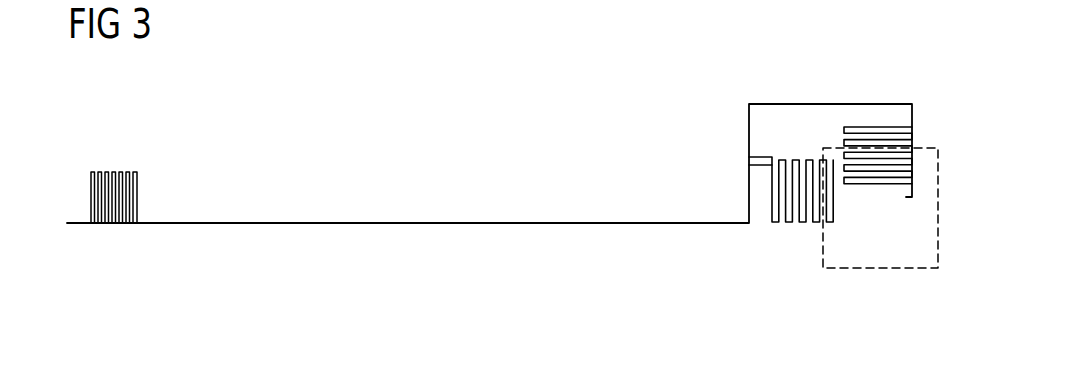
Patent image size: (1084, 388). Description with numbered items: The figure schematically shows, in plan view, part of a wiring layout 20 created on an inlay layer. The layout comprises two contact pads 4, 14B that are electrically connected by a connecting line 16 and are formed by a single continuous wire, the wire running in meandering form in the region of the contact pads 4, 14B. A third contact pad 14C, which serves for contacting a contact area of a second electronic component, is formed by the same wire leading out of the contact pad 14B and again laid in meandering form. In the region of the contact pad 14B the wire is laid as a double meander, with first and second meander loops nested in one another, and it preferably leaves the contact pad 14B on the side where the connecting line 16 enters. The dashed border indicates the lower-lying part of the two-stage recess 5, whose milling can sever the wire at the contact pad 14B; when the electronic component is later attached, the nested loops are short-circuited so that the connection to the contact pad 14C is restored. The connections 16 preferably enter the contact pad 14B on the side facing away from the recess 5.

The contact pad 4 is at (130, 191).
The connecting line 16 is at (375, 222).
The wiring layout 20 is at (538, 148).
The contact pad 14B is at (790, 206).
The contact pad 14C is at (878, 140).
The two-stage recess 5 is at (886, 270).